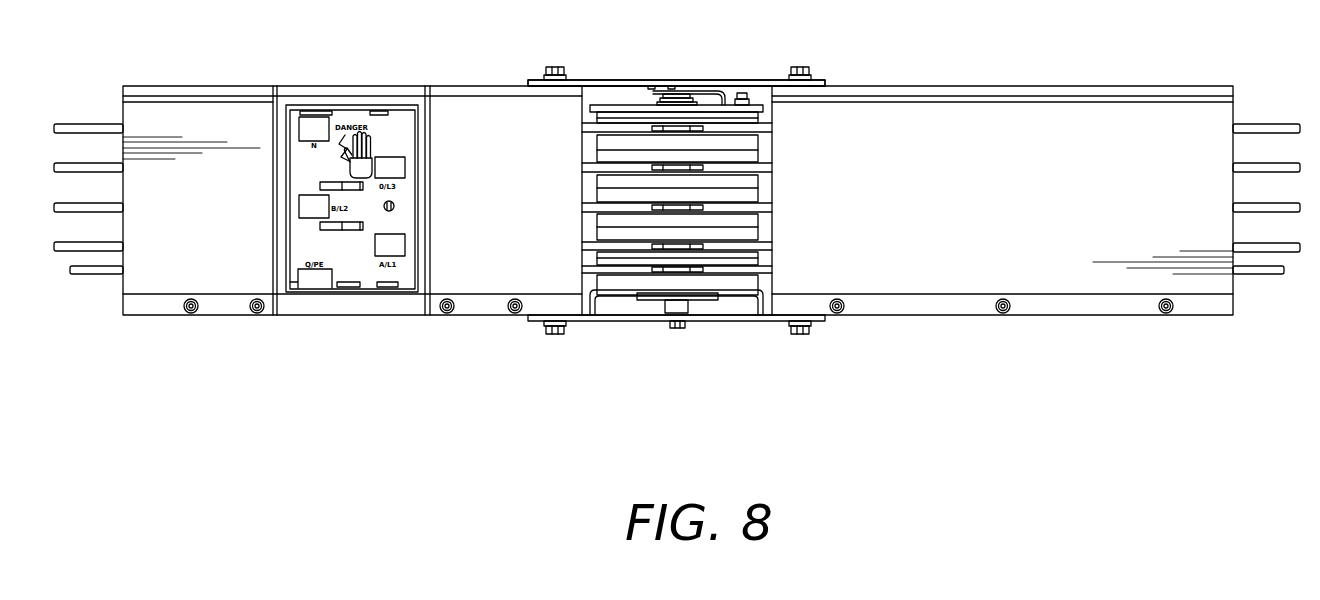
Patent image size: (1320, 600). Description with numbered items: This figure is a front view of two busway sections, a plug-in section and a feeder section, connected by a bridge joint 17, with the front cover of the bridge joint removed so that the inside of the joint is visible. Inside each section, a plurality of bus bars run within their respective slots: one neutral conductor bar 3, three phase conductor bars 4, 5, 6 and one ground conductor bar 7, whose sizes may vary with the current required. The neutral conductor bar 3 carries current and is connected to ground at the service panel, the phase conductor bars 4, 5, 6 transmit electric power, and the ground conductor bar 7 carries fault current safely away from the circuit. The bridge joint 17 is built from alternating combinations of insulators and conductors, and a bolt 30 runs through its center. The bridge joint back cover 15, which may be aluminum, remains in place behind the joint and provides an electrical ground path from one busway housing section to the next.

The neutral conductor bar 3 is at (1283, 124).
The phase conductor bar 4 is at (1283, 164).
The phase conductor bar 5 is at (1283, 203).
The phase conductor bar 6 is at (1283, 243).
The ground conductor bar 7 is at (1252, 275).
The bridge joint back cover 15 is at (738, 82).
The bridge joint 17 is at (630, 105).
The bolt 30 is at (678, 82).